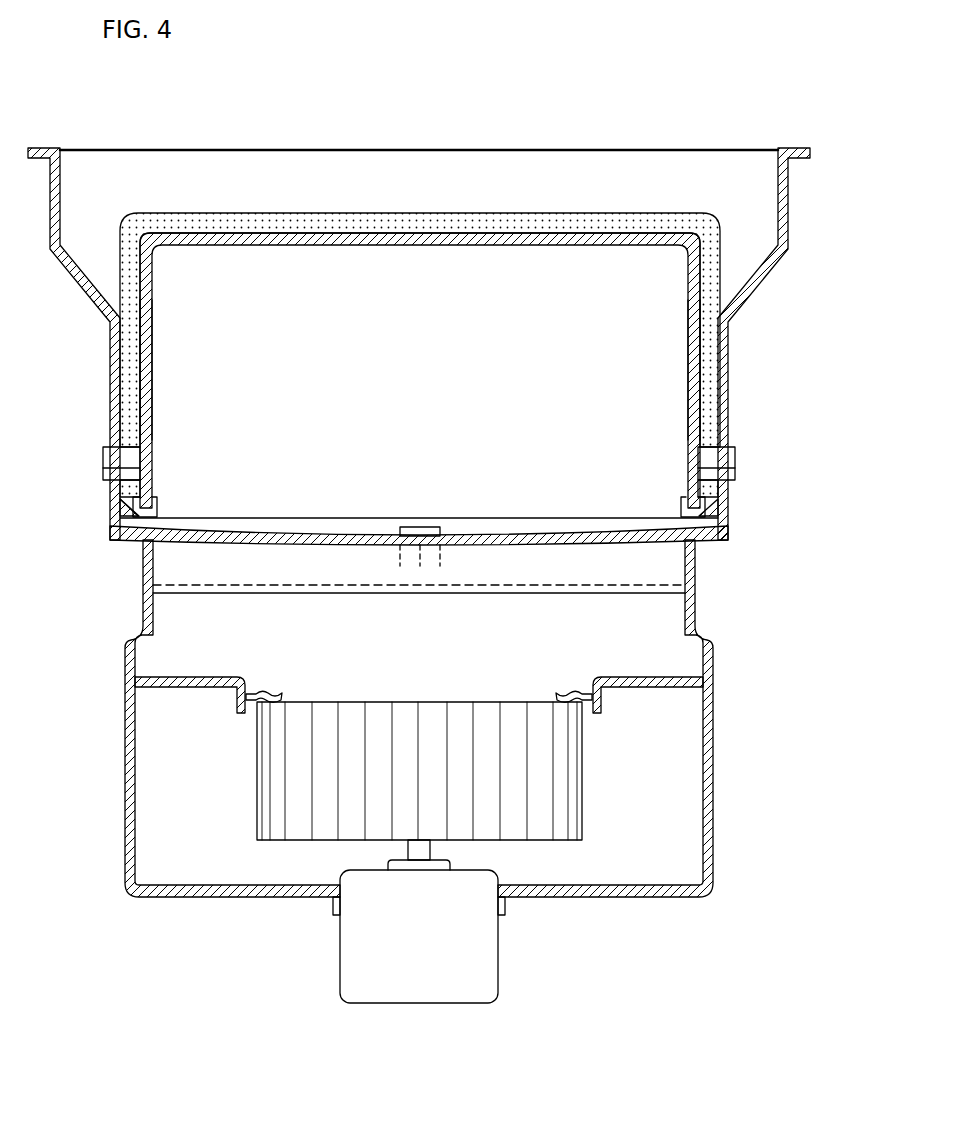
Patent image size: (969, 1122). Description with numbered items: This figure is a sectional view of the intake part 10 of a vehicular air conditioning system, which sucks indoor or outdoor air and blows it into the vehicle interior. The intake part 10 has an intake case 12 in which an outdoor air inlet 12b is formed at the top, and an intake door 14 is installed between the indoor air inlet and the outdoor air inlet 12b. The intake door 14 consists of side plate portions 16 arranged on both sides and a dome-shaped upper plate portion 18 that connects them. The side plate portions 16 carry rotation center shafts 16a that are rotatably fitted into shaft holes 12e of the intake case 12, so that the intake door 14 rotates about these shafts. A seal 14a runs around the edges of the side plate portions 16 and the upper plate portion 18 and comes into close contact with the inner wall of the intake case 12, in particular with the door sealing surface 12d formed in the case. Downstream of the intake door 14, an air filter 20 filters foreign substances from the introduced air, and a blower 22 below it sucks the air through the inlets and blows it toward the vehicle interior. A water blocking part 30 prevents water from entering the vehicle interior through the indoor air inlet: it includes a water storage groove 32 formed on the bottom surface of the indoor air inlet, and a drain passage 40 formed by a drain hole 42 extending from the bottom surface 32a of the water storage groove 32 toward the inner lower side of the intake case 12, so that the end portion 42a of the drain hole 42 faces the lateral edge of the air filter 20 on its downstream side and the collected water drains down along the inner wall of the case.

The intake part 10 is at (622, 132).
The intake case 12 is at (448, 320).
The outdoor air inlet 12b is at (470, 185).
The door sealing surface 12d is at (124, 509).
The shaft holes 12e is at (115, 470).
The intake door 14 is at (420, 304).
The seal 14a is at (232, 212).
The side plate portions 16 is at (152, 378).
The rotation center shafts 16a is at (108, 450).
The upper plate portion 18 is at (438, 246).
The air filter 20 is at (162, 568).
The blower 22 is at (268, 778).
The water blocking part 30 is at (419, 502).
The water storage groove 32 is at (318, 530).
The bottom surface 32a is at (240, 527).
The drain passage 40 is at (439, 554).
The drain hole 42 is at (425, 527).
The end portion 42a is at (424, 560).